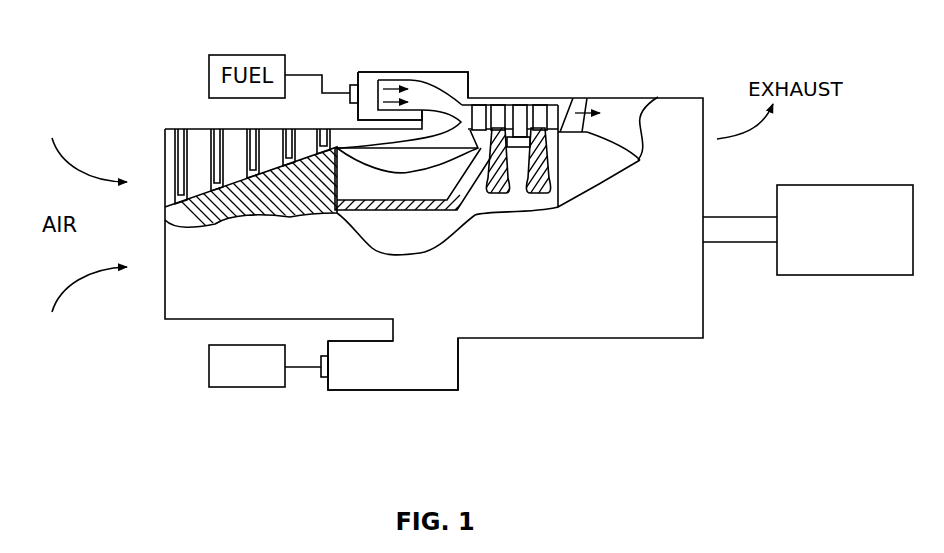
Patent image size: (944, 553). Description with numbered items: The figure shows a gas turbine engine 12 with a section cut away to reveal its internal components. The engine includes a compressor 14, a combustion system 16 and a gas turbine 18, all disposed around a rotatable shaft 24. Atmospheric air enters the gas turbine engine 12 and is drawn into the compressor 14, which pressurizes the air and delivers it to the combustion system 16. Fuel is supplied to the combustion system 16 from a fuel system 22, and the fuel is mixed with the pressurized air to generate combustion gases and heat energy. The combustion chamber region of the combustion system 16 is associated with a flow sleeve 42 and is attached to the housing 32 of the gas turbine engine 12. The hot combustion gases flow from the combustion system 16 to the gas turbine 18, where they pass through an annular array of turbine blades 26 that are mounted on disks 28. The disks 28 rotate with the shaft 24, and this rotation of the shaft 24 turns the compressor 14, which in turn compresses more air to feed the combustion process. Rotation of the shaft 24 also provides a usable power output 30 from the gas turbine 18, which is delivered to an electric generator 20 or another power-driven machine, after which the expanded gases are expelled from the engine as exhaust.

The gas turbine engine 12 is at (610, 338).
The compressor 14 is at (238, 129).
The combustion system 16 is at (443, 71).
The gas turbine 18 is at (554, 119).
The electric generator 20 is at (837, 262).
The fuel system 22 is at (209, 377).
The rotatable shaft 24 is at (365, 205).
The turbine blades 26 is at (477, 98).
The disks 28 is at (558, 153).
The power output 30 is at (730, 216).
The housing 32 is at (343, 137).
The flow sleeve 42 is at (408, 80).